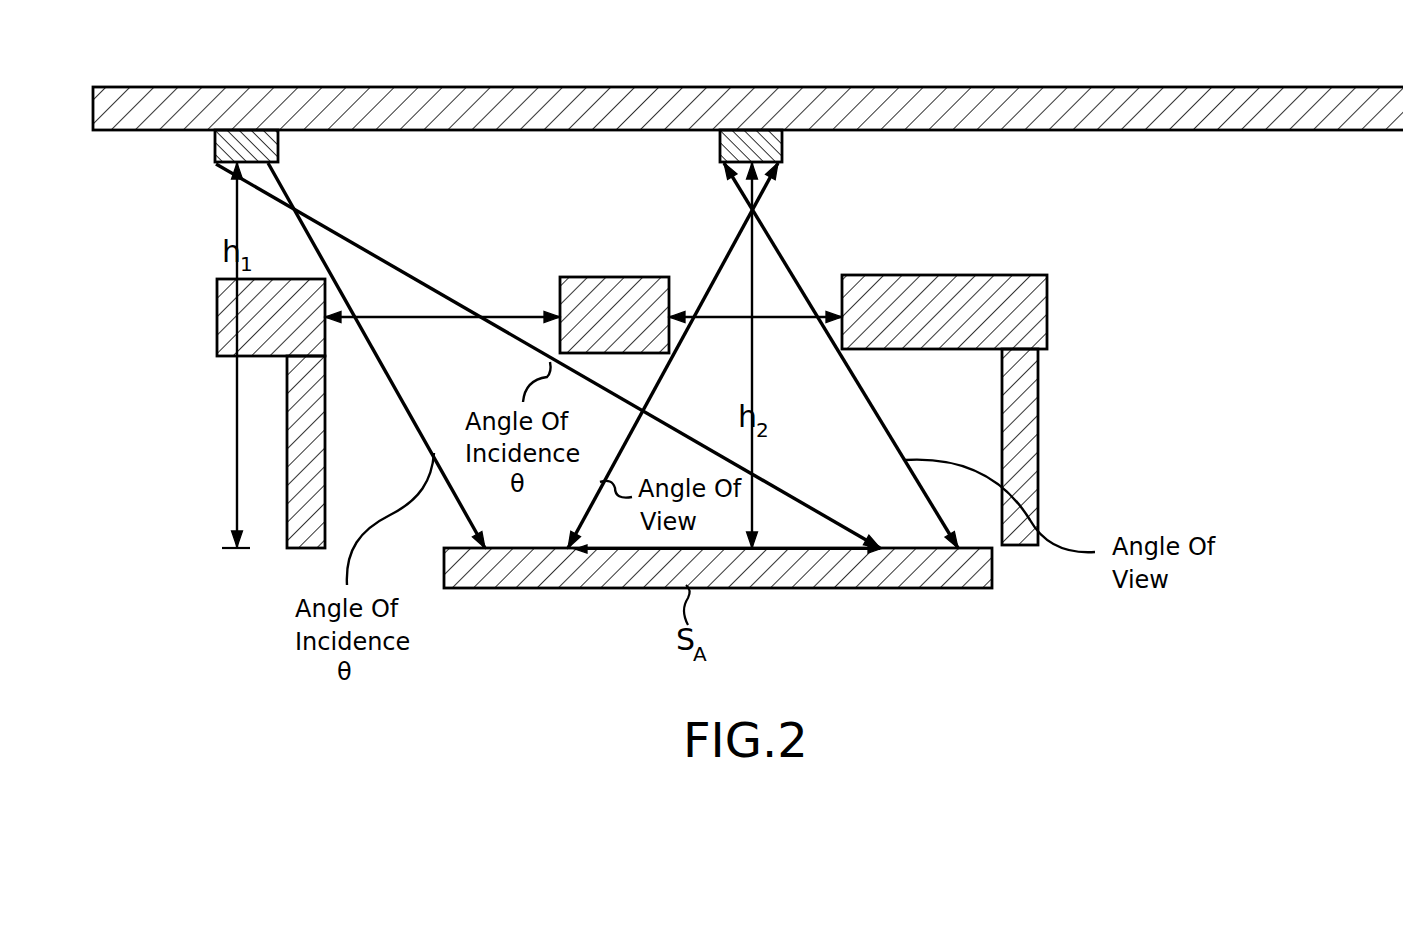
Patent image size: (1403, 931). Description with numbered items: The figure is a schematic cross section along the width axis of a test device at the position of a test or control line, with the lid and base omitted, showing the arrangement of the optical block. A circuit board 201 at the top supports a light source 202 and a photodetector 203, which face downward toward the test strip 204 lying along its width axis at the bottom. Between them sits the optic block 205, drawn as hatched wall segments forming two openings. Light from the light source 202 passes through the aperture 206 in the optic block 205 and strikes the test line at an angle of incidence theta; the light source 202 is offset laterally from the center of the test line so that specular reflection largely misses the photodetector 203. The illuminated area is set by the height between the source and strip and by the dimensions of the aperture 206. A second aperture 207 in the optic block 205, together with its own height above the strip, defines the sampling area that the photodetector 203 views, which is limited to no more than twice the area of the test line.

The circuit board 201 is at (1052, 87).
The light source 202 is at (223, 143).
The photodetector 203 is at (775, 137).
The test strip 204 is at (555, 582).
The optic block 205 is at (232, 316).
The aperture 206 is at (424, 318).
The second aperture 207 is at (780, 318).